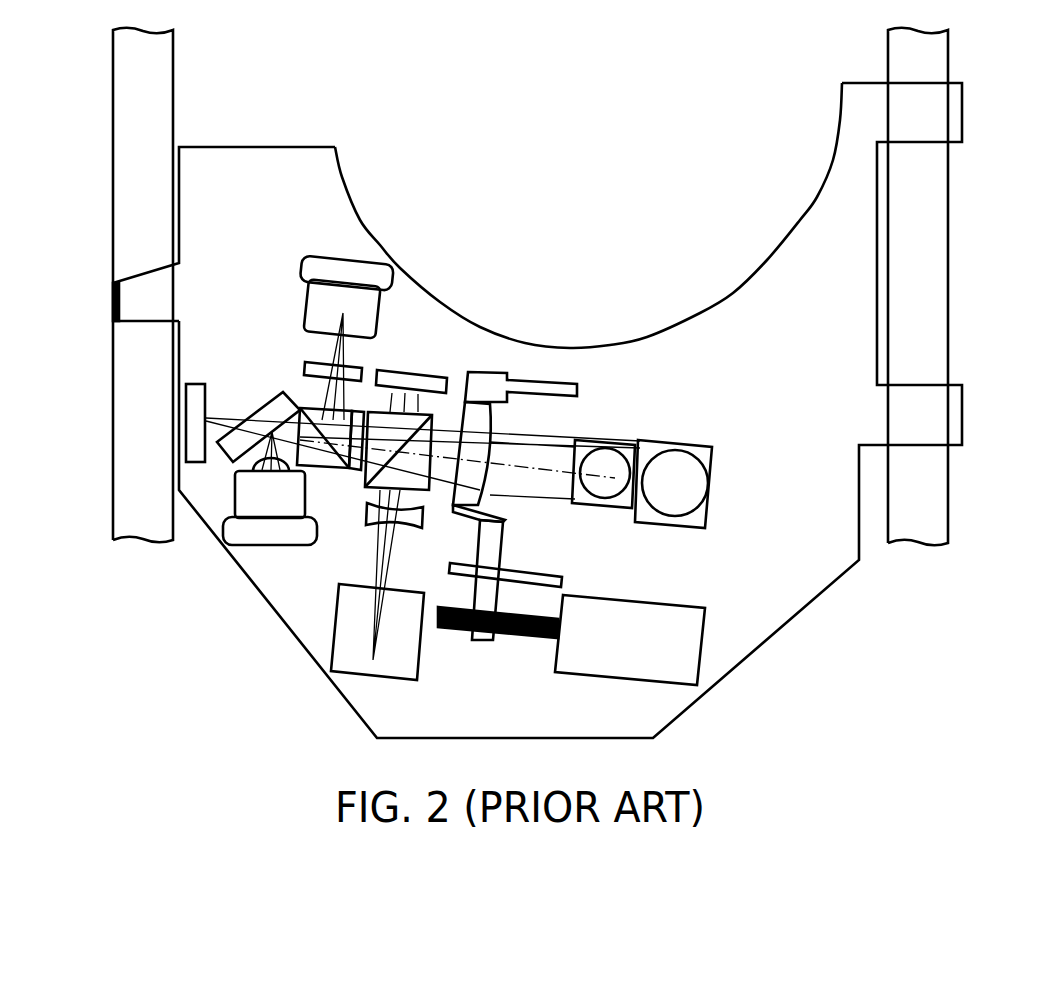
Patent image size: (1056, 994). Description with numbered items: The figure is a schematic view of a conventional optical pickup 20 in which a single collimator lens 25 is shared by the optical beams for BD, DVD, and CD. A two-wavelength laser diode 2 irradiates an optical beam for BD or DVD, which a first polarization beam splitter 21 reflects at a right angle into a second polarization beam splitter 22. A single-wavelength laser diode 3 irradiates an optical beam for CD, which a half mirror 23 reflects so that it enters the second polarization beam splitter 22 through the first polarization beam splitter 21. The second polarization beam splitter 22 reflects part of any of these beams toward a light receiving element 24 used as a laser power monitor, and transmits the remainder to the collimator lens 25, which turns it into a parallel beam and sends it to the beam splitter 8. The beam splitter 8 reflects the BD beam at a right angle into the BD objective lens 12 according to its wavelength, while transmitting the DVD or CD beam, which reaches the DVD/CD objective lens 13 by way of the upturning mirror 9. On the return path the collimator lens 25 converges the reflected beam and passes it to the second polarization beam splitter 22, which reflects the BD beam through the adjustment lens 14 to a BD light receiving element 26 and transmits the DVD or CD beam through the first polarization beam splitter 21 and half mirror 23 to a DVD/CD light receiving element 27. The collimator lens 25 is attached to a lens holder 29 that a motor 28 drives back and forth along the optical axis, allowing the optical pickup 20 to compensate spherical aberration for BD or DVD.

The two-wavelength laser diode 2 is at (370, 262).
The single-wavelength laser diode 3 is at (253, 545).
The beam splitter 8 is at (620, 510).
The upturning mirror 9 is at (685, 521).
The BD objective lens 12 is at (612, 455).
The DVD/CD objective lens 13 is at (683, 460).
The adjustment lens 14 is at (373, 522).
The optical pickup 20 is at (1019, 681).
The first polarization beam splitter 21 is at (328, 470).
The second polarization beam splitter 22 is at (426, 490).
The half mirror 23 is at (263, 410).
The light receiving element for a laser power monitor 24 is at (428, 372).
The collimator lens 25 is at (480, 500).
The BD light receiving element 26 is at (417, 675).
The DVD/CD light receiving element 27 is at (199, 384).
The motor 28 is at (700, 606).
The lens holder 29 is at (483, 641).